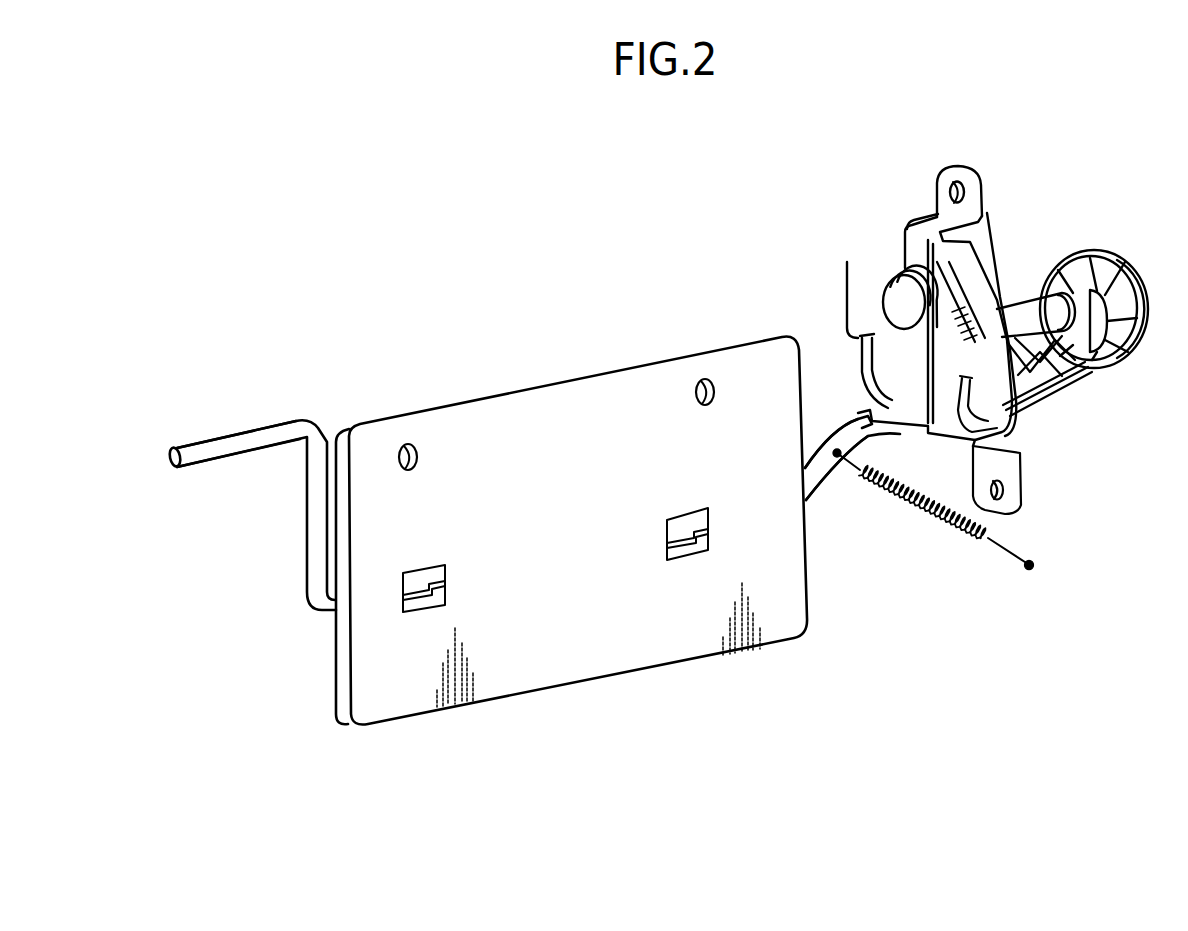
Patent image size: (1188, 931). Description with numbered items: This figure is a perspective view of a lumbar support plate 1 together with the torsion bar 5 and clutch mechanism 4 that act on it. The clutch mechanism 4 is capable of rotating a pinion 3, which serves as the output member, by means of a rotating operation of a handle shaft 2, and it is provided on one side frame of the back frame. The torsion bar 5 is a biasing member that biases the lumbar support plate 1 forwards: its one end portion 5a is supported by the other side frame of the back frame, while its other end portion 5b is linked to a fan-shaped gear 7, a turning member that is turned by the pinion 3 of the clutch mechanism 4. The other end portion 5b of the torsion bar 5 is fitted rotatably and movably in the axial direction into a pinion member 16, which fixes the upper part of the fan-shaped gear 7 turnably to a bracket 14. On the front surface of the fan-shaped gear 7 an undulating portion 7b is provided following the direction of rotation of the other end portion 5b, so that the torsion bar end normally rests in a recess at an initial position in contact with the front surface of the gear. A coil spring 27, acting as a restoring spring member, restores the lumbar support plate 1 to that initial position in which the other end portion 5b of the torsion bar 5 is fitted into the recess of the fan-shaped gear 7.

The lumbar support plate 1 is at (525, 650).
The handle shaft 2 is at (1022, 317).
The pinion 3 is at (967, 313).
The clutch mechanism 4 is at (1013, 247).
The torsion bar 5 is at (317, 613).
The one end portion of the torsion bar 5a is at (217, 437).
The other end portion of the torsion bar 5b is at (905, 388).
The fan-shaped gear 7 is at (958, 357).
The undulating portion 7b is at (973, 413).
The bracket 14 is at (965, 257).
The pinion member 16 is at (893, 292).
The coil spring 27 is at (947, 528).